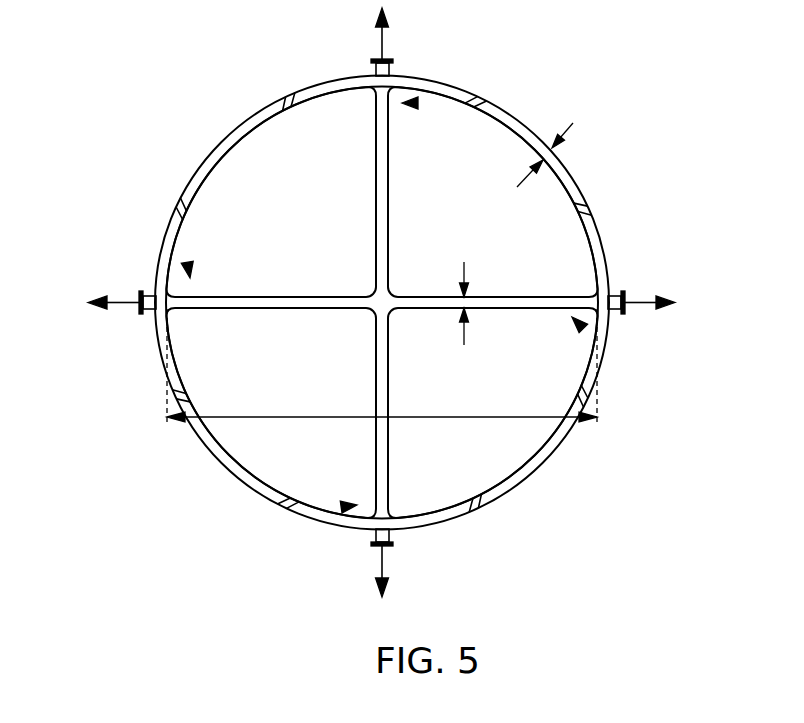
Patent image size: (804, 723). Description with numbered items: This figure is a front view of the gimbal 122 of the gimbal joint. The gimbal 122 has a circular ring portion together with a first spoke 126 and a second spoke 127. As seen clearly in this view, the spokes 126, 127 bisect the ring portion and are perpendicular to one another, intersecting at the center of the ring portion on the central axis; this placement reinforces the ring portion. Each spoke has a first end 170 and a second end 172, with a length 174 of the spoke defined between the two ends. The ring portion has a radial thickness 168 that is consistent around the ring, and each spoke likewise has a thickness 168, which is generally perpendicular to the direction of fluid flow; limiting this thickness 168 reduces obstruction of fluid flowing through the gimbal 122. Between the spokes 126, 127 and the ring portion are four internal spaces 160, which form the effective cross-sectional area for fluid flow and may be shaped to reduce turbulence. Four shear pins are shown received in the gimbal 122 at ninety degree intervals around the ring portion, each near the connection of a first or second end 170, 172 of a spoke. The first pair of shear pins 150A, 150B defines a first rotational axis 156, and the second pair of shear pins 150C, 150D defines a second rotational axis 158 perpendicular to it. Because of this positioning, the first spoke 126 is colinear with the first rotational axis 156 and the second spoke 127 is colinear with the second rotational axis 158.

The gimbal 122 is at (195, 130).
The first spoke 126 is at (320, 301).
The second spoke 127 is at (384, 347).
The shear pin 150A is at (391, 66).
The shear pin 150B is at (391, 535).
The shear pin 150C is at (151, 292).
The shear pin 150D is at (615, 292).
The first rotational axis 156 is at (378, 42).
The second rotational axis 158 is at (122, 308).
The internal spaces 160 is at (292, 231).
The thickness 168 is at (463, 263).
The first end 170 is at (187, 256).
The second end 172 is at (418, 103).
The length 174 is at (304, 420).